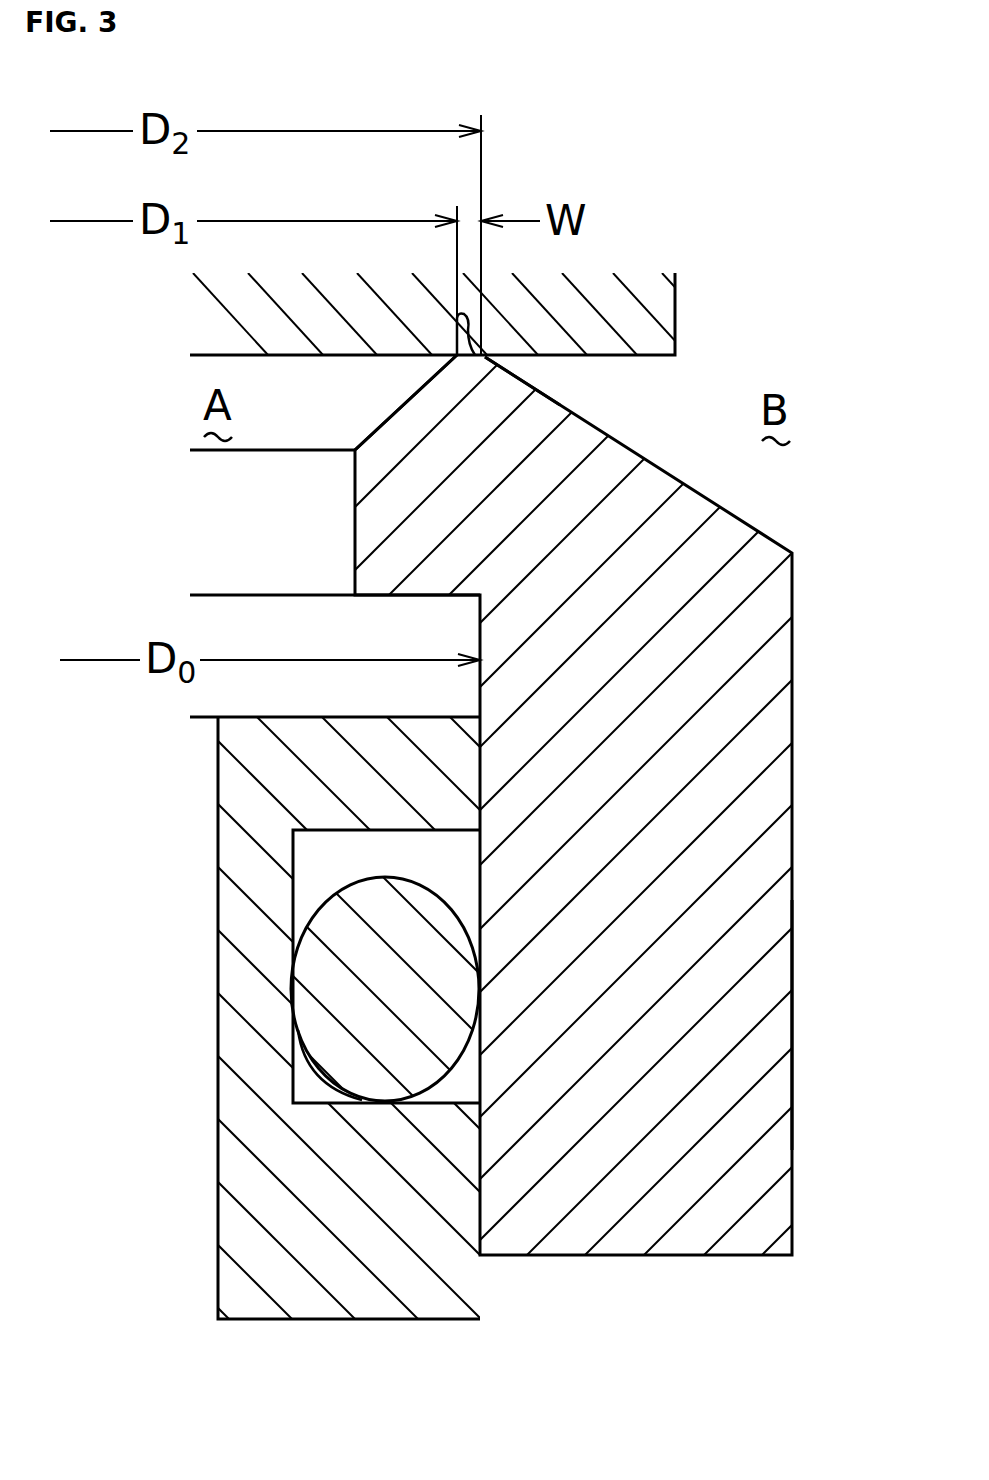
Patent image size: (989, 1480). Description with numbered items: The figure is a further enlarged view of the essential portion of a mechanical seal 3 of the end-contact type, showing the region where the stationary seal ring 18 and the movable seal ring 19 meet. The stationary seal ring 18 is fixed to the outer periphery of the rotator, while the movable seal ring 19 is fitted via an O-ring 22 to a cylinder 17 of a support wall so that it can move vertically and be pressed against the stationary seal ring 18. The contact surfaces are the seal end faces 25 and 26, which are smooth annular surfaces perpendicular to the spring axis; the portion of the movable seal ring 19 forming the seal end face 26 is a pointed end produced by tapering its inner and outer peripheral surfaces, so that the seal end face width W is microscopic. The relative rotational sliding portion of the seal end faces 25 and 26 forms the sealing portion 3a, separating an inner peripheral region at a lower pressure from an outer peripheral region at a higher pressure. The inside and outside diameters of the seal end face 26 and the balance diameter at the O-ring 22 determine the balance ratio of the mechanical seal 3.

The mechanical seal 3 is at (797, 703).
The sealing portion 3a is at (517, 367).
The cylinder 17 is at (222, 862).
The stationary seal ring 18 is at (655, 302).
The movable seal ring 19 is at (775, 1028).
The O-ring 22 is at (330, 982).
The seal end face 25 is at (440, 360).
The seal end face 26 is at (457, 313).